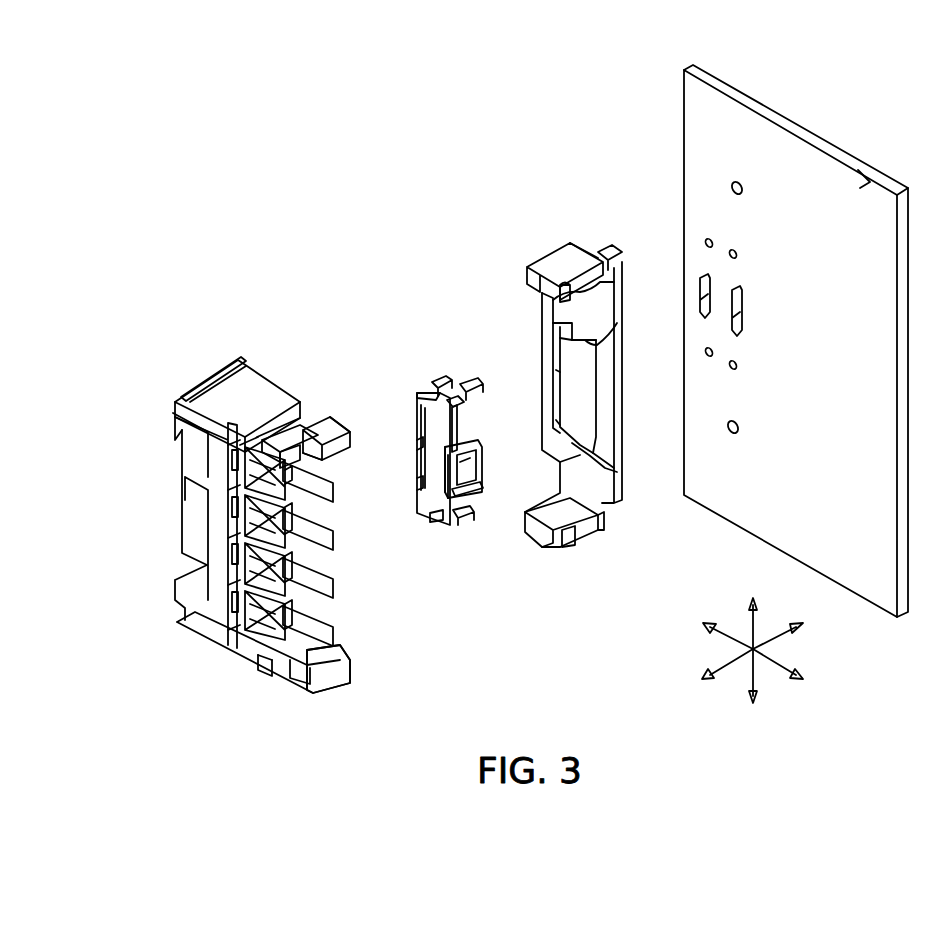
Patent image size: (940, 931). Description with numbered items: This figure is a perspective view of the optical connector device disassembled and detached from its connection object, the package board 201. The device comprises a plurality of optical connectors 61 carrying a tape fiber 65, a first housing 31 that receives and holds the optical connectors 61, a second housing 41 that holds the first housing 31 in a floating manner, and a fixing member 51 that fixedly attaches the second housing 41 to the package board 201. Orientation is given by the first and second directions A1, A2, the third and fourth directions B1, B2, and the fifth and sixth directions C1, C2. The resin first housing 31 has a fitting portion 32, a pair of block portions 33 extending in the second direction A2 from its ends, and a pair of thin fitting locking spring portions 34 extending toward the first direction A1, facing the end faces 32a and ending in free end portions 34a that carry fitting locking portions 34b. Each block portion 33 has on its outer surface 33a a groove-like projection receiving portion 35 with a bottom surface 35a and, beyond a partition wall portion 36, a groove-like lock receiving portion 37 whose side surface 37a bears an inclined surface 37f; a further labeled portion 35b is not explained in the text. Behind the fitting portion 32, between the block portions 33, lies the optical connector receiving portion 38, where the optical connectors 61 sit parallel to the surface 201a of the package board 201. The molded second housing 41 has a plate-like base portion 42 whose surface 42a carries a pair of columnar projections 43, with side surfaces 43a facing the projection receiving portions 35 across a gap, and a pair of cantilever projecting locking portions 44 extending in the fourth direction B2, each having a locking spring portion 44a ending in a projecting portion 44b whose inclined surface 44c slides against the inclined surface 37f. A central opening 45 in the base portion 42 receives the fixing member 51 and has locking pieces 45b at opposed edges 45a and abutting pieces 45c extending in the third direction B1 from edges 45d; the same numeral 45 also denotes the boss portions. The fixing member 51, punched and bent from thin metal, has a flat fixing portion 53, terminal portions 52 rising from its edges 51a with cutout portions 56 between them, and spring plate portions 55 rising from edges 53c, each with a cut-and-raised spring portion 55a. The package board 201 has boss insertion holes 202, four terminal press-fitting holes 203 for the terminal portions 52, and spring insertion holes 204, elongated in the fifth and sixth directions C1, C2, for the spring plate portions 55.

The first housing 31 is at (219, 481).
The fitting portion 32 is at (182, 535).
The end faces 32a is at (175, 425).
The block portions 33 is at (320, 462).
The outer surface 33a is at (290, 395).
The fitting locking spring portions 34 is at (252, 365).
The free end portions 34a is at (220, 378).
The fitting locking portions 34b is at (240, 355).
The projection receiving portion 35 is at (305, 410).
The bottom surface 35a is at (240, 447).
The side wall notch 35b is at (262, 672).
The partition wall portion 36 is at (300, 428).
The lock receiving portion 37 is at (325, 420).
The side surface 37a is at (330, 462).
The inclined surface 37f is at (335, 420).
The optical connector receiving portion 38 is at (350, 665).
The second housing 41 is at (556, 250).
The base portion 42 is at (606, 390).
The surface 42a is at (606, 525).
The columnar projections 43 is at (532, 262).
The side surface 43a is at (550, 560).
The projecting locking portions 44 is at (558, 310).
The locking spring portion 44a is at (595, 260).
The projecting portion 44b is at (555, 290).
The inclined surface 44c is at (580, 250).
The opening 45 is at (612, 255).
The edges 45a is at (605, 330).
The locking pieces 45b is at (558, 345).
The abutting pieces 45c is at (550, 368).
The edges 45d is at (552, 418).
The fixing member 51 is at (450, 535).
The edges 51a is at (440, 398).
The terminal portions 52 is at (440, 378).
The fixing portion 53 is at (428, 455).
The edges 53c is at (418, 412).
The spring plate portions 55 is at (483, 470).
The spring portion 55a is at (467, 452).
The cutout portions 56 is at (470, 378).
The optical connectors 61 is at (295, 498).
The tape fiber 65 is at (335, 488).
The package board 201 is at (780, 117).
The surface 201a is at (852, 172).
The boss insertion holes 202 is at (743, 184).
The terminal press-fitting holes 203 is at (713, 240).
The spring insertion holes 204 is at (711, 280).
The first direction A1 is at (716, 625).
The second direction A2 is at (790, 668).
The third direction B1 is at (792, 628).
The fourth direction B2 is at (718, 677).
The fifth direction C1 is at (740, 628).
The sixth direction C2 is at (758, 690).